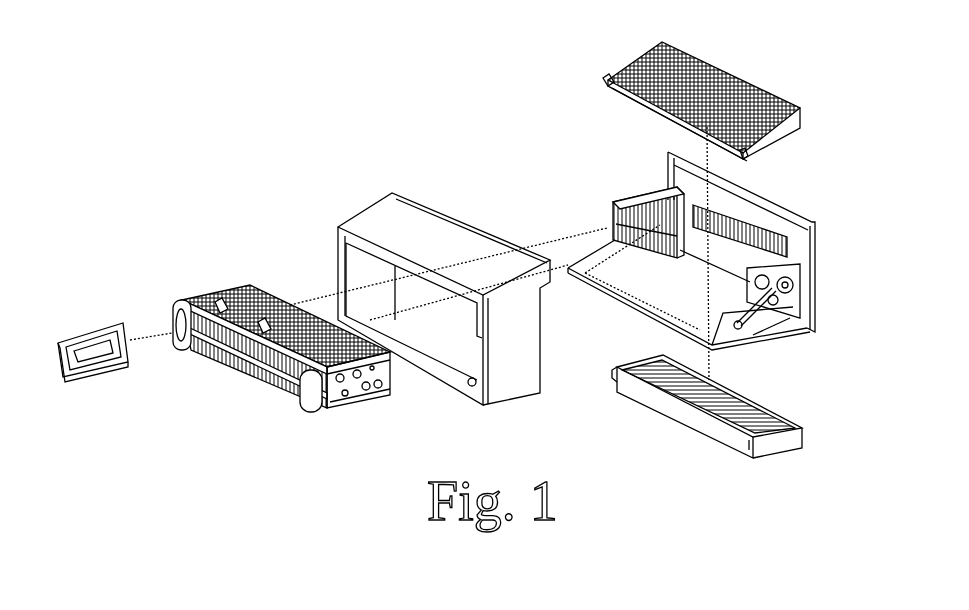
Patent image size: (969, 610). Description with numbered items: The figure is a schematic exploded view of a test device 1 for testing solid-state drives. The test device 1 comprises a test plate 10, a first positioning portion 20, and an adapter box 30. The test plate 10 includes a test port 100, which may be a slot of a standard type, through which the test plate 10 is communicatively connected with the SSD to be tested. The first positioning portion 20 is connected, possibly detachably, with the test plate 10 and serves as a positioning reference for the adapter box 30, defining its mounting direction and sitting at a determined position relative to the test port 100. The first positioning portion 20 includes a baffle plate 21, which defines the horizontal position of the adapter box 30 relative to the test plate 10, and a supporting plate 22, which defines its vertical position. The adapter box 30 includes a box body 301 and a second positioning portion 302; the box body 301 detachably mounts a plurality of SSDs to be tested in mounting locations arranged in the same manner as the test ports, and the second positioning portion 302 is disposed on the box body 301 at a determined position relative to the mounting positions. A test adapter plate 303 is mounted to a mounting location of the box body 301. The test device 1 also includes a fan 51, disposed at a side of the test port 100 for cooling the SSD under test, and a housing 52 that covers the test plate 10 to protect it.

The test device 1 is at (441, 37).
The test plate 10 is at (787, 190).
The first positioning portion 20 is at (862, 268).
The baffle plate 21 is at (798, 277).
The supporting plate 22 is at (740, 322).
The adapter box 30 is at (168, 247).
The fan 51 is at (760, 80).
The housing 52 is at (365, 200).
The test port 100 is at (770, 238).
The box body 301 is at (250, 288).
The second positioning portion 302 is at (357, 405).
The test adapter plate 303 is at (97, 330).